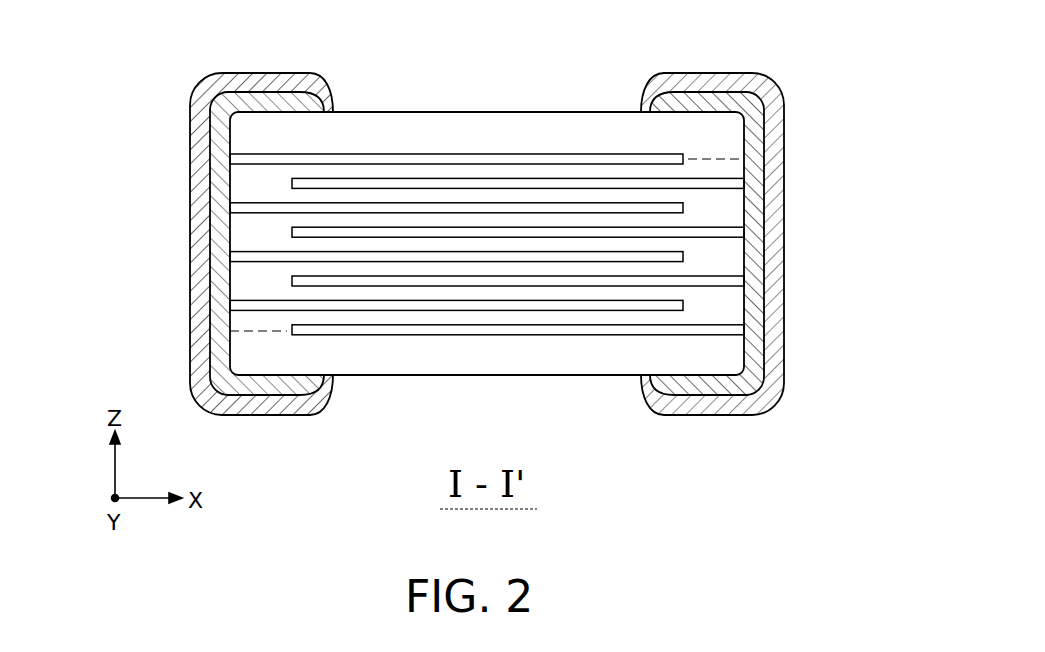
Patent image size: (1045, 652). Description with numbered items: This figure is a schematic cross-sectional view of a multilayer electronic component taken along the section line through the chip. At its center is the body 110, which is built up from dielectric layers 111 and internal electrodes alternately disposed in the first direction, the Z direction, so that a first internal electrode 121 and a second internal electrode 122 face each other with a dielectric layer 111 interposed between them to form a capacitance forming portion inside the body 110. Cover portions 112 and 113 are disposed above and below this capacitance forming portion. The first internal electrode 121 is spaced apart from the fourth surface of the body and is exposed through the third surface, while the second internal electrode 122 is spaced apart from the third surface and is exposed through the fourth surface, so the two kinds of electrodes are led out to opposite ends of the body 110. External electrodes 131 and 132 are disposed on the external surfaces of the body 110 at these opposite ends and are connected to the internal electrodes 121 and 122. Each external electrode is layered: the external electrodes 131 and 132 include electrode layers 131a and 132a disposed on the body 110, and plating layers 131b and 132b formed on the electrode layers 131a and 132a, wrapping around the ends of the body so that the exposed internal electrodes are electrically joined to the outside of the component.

The body 110 is at (414, 111).
The dielectric layer 111 is at (360, 197).
The cover portion 112 is at (493, 130).
The cover portion 113 is at (490, 358).
The first internal electrode 121 is at (562, 155).
The second internal electrode 122 is at (625, 180).
The external electrode 131 is at (181, 244).
The electrode layer 131a is at (218, 168).
The plating layer 131b is at (203, 198).
The external electrode 132 is at (794, 244).
The electrode layer 132a is at (755, 142).
The plating layer 132b is at (775, 168).